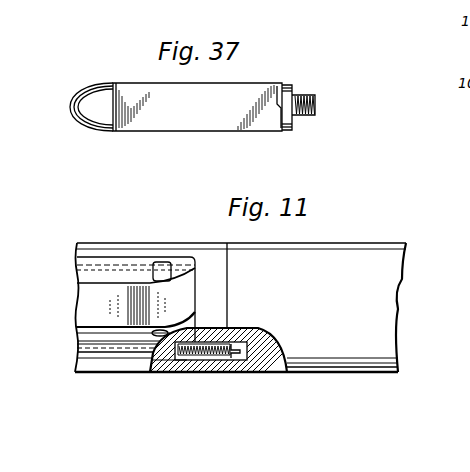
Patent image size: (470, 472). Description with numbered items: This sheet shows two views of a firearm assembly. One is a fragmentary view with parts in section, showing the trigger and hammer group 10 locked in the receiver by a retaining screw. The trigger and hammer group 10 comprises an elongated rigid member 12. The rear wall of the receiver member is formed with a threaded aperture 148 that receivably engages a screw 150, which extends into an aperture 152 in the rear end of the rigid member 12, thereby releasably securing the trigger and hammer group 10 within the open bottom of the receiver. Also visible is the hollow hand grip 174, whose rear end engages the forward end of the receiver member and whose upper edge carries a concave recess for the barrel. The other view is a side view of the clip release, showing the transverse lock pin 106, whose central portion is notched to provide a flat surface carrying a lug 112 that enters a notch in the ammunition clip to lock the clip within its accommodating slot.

In FIG. 11, the trigger and hammer group 10 is at (115, 362).
In FIG. 11, the elongated rigid member 12 is at (97, 300).
In FIG. 37, the transverse lock pin 106 is at (80, 103).
In FIG. 11, the transverse lock pin 106 is at (164, 273).
In FIG. 37, the lug 112 is at (277, 107).
In FIG. 11, the threaded aperture 148 is at (220, 333).
In FIG. 11, the screw 150 is at (241, 351).
In FIG. 11, the aperture 152 is at (192, 368).
In FIG. 11, the hollow hand grip 174 is at (377, 345).